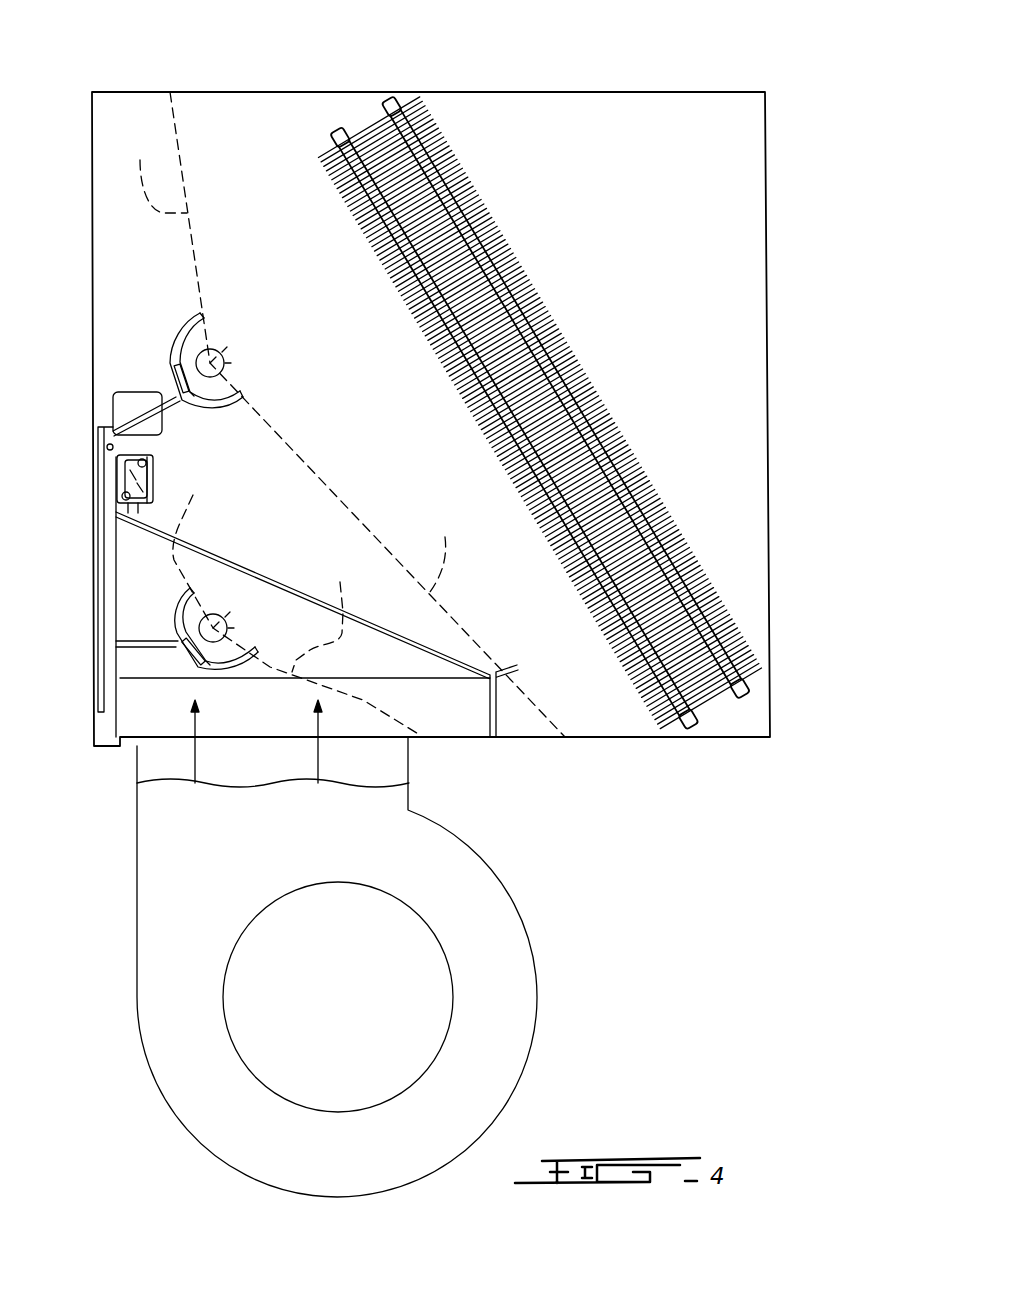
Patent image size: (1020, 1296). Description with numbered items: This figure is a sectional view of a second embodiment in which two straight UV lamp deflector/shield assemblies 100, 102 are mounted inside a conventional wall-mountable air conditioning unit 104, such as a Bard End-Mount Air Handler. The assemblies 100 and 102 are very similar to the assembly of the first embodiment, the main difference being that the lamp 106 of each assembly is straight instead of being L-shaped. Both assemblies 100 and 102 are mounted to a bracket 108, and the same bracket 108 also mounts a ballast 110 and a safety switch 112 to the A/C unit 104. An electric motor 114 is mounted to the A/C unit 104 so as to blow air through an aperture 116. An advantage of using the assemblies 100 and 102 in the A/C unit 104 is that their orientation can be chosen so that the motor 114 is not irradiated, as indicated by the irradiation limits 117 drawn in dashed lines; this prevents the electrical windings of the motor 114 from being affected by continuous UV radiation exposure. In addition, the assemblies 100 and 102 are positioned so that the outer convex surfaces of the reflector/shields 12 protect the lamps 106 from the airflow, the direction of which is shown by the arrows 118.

The air conditioning unit 104 is at (90, 177).
The straight UV lamp deflector/shield assembly 100 is at (168, 350).
The straight UV lamp deflector/shield assembly 102 is at (168, 625).
The lamp 106 is at (215, 348).
The reflector/shield 12 is at (195, 401).
The bracket 108 is at (168, 391).
The ballast 110 is at (124, 402).
The safety switch 112 is at (126, 482).
The electric motor 114 is at (497, 872).
The aperture 116 is at (357, 742).
The irradiation limits 117 is at (339, 414).
The arrows 118 is at (316, 765).